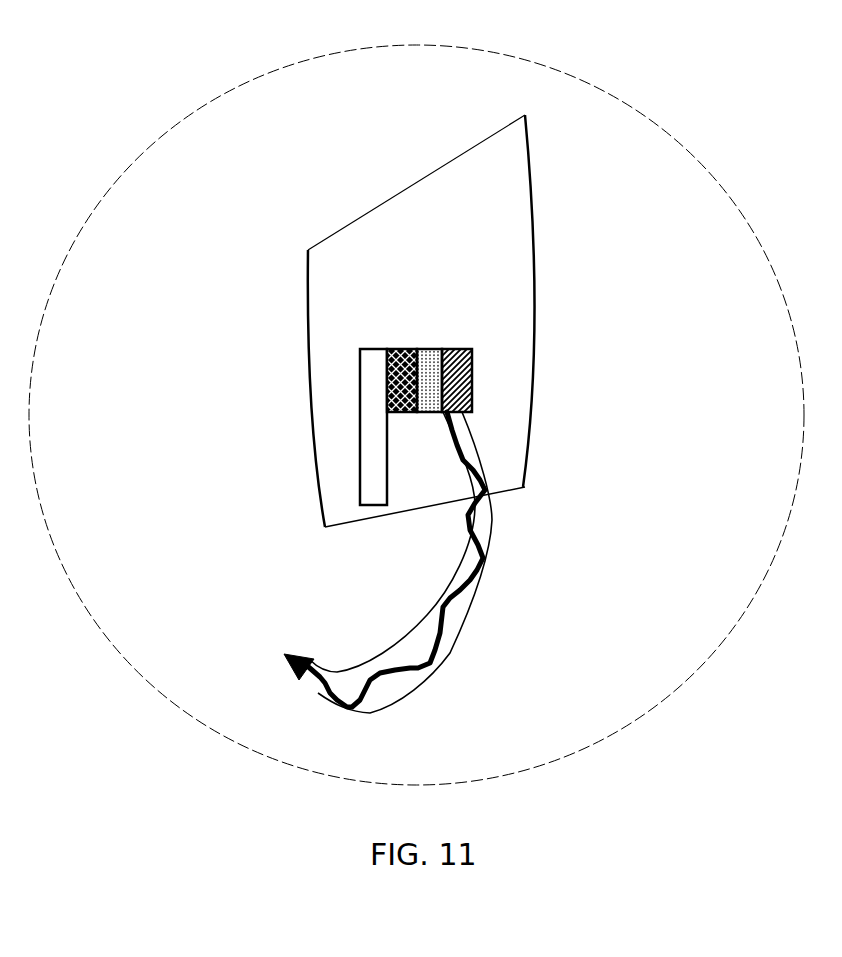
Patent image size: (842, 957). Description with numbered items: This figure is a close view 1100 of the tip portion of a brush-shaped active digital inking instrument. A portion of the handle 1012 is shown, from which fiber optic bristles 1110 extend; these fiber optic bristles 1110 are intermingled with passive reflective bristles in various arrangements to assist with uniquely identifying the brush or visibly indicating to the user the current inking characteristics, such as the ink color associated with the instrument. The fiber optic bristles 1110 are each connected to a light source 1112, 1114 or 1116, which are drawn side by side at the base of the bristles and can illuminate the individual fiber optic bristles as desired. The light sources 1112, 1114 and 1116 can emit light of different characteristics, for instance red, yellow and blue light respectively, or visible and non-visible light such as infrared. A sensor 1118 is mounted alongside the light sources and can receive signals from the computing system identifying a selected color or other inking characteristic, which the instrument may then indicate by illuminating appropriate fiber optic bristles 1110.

The enlarged detail view circle 1100 is at (647, 116).
The handle 1012 is at (340, 298).
The fiber optic bristles 1110 is at (492, 550).
The light source 1112 is at (472, 363).
The light source 1114 is at (433, 350).
The light source 1116 is at (408, 350).
The sensor 1118 is at (373, 450).